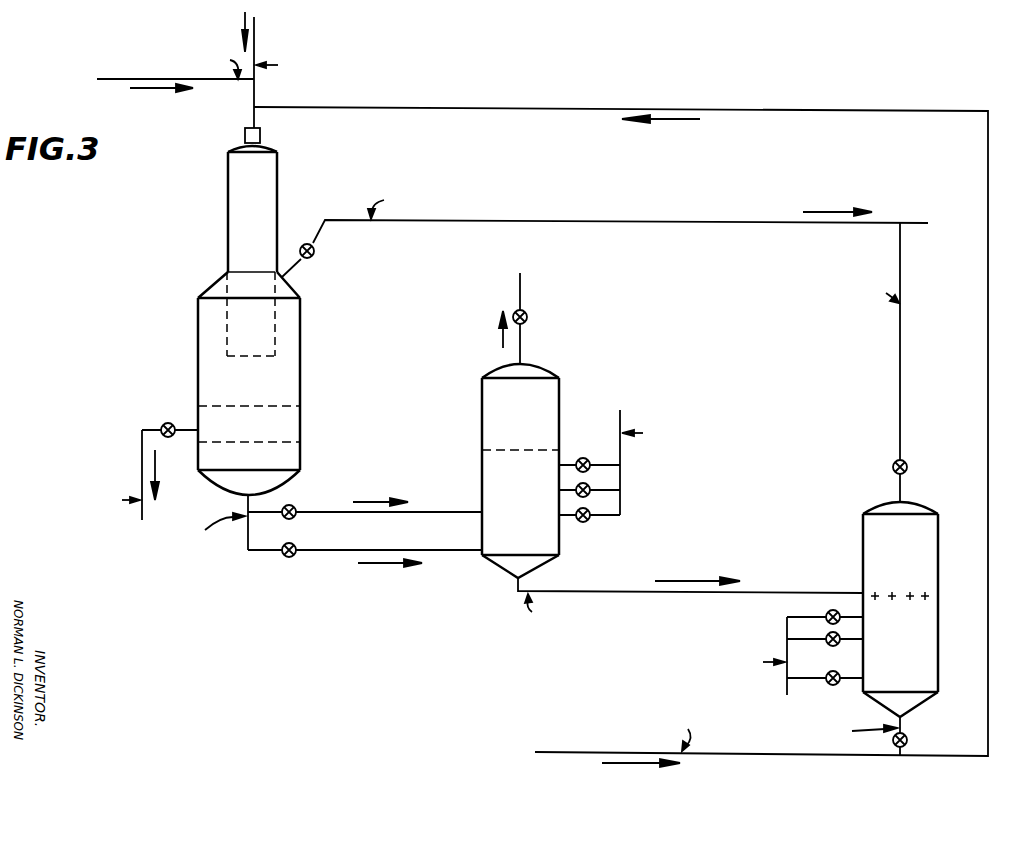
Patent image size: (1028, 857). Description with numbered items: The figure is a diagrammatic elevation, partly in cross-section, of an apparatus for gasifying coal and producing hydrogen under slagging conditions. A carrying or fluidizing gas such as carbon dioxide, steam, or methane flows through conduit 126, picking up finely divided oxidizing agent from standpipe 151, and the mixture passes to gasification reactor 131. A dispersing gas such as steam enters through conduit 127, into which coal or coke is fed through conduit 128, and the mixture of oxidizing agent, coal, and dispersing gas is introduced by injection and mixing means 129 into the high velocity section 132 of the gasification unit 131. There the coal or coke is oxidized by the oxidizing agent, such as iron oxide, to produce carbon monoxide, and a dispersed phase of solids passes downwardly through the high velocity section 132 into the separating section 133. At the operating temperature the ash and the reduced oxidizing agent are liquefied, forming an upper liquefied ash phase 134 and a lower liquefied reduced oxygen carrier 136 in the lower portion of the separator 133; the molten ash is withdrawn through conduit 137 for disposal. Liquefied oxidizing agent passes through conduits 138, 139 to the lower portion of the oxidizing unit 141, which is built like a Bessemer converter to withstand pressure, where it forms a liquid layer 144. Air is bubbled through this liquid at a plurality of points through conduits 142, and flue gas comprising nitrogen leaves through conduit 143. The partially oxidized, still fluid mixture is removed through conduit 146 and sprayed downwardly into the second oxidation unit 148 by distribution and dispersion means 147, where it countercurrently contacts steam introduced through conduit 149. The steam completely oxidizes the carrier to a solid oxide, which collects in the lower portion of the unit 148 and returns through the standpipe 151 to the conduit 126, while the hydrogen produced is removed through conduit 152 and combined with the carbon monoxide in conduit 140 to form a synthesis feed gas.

The carrying gas conduit 126 is at (875, 90).
The dispersing gas conduit 127 is at (256, 93).
The coal or coke conduit 128 is at (240, 80).
The injection and mixing means 129 is at (262, 135).
The gasification reactor 131 is at (303, 322).
The high velocity section 132 is at (277, 192).
The separating section 133 is at (285, 380).
The liquefied ash phase 134 is at (282, 425).
The liquefied reduced oxygen carrier 136 is at (280, 460).
The ash withdrawal conduit 137 is at (142, 450).
The liquefied oxidizing agent conduit 138 is at (330, 513).
The liquefied oxidizing agent conduit 139 is at (312, 551).
The carbon monoxide conduit 140 is at (596, 228).
The oxidizing unit 141 is at (540, 408).
The air conduits 142 is at (620, 475).
The flue gas conduit 143 is at (522, 345).
The liquid layer 144 is at (548, 450).
The fluid oxidizing agent conduit 146 is at (760, 595).
The distribution and dispersion means 147 is at (926, 597).
The second oxidation unit 148 is at (918, 548).
The steam conduit 149 is at (787, 632).
The standpipe 151 is at (905, 725).
The hydrogen conduit 152 is at (898, 358).